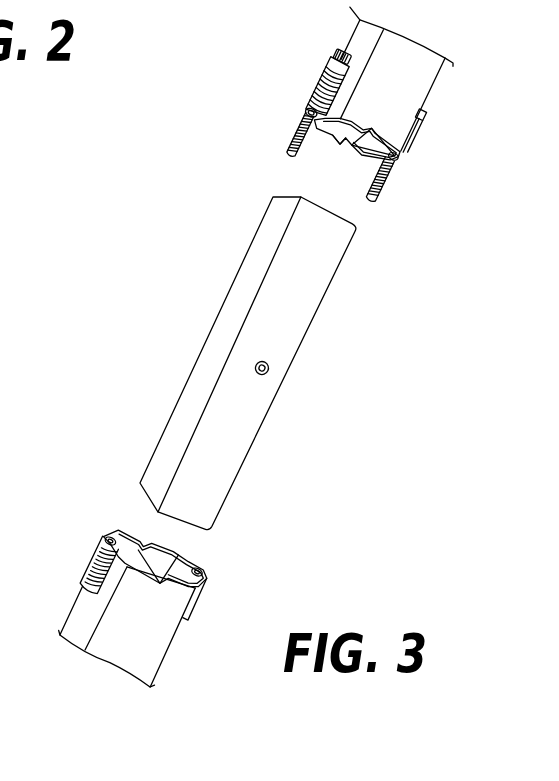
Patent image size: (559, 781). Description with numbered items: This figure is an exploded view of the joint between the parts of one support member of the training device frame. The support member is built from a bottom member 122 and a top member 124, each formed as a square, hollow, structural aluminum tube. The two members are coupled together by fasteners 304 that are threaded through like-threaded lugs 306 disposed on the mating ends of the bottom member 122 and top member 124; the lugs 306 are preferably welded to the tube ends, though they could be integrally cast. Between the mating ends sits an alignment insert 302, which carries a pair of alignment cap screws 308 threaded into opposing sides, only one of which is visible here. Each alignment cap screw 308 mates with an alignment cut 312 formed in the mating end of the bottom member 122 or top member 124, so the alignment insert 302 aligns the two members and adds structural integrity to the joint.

The bottom member 122 is at (110, 635).
The top member 124 is at (400, 78).
The alignment insert 302 is at (220, 343).
The fastener 304 is at (328, 54).
The lug 306 is at (318, 88).
The alignment cap screw 308 is at (268, 370).
The alignment cut 312 is at (333, 140).